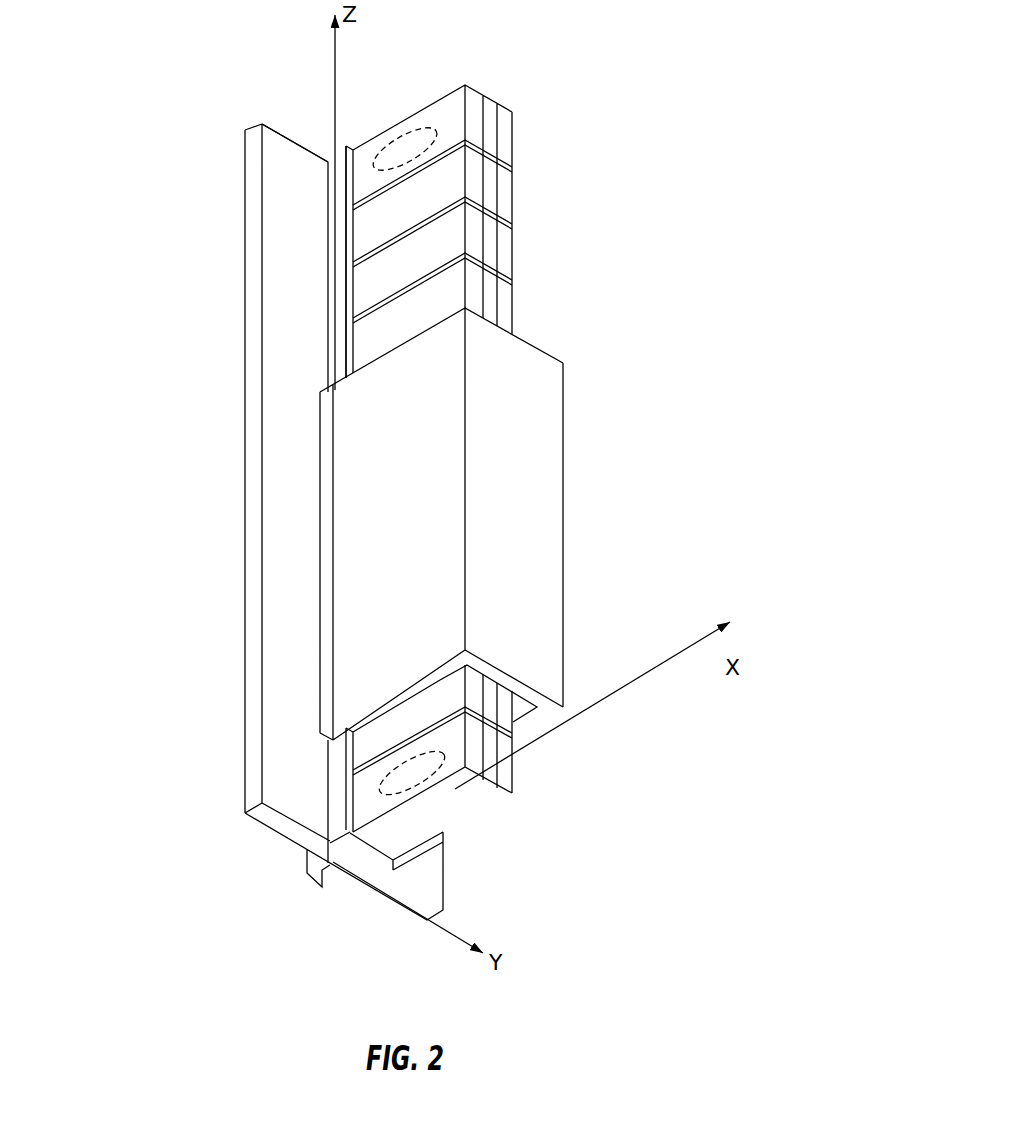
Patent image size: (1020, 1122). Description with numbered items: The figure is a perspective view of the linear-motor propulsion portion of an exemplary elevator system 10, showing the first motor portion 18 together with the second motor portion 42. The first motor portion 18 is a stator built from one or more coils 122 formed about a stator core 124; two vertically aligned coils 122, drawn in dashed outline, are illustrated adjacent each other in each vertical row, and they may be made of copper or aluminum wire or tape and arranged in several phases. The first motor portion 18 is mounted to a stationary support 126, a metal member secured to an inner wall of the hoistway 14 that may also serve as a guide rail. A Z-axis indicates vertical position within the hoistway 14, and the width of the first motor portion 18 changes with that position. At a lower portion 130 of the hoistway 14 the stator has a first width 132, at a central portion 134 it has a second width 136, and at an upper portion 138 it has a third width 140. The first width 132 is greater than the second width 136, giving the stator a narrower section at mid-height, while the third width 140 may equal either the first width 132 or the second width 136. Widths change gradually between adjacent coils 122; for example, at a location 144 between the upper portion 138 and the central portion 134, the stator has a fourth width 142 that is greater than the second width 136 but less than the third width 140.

The elevator system 10 is at (727, 288).
The hoistway 14 is at (645, 204).
The first motor portion 18 is at (527, 181).
The second motor portion 42 is at (548, 530).
The coils 122 is at (373, 137).
The stator core 124 is at (422, 772).
The stationary support 126 is at (275, 277).
The lower portion 130 is at (600, 782).
The first width 132 is at (413, 723).
The central portion 134 is at (342, 333).
The second width 136 is at (413, 240).
The upper portion 138 is at (520, 97).
The third width 140 is at (413, 68).
The fourth width 142 is at (413, 153).
The location 144 is at (314, 249).